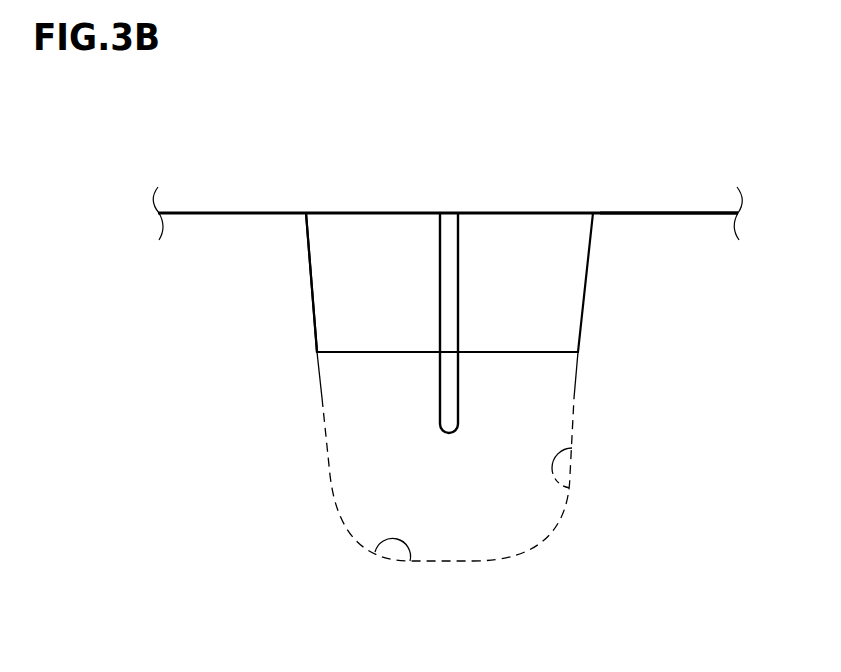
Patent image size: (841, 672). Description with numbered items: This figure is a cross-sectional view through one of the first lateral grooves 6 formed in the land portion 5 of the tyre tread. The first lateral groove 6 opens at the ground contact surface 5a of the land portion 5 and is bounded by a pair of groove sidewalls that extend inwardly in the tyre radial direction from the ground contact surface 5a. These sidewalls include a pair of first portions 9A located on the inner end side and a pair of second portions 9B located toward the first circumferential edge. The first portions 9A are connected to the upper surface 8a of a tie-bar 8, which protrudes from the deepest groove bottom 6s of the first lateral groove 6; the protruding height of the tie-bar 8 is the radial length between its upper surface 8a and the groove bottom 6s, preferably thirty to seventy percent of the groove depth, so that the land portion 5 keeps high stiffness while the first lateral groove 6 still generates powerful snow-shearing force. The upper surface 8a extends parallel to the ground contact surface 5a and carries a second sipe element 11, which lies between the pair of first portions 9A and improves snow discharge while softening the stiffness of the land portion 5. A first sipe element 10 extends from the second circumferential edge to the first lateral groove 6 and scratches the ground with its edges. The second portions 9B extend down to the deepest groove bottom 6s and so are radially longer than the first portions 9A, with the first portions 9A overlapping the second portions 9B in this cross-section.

The land portion 5 is at (233, 193).
The ground contact surface 5a is at (665, 213).
The tie-bar 8 is at (407, 332).
The first portions 9A is at (313, 282).
The upper surface 8a is at (363, 350).
The first sipe element 10 is at (458, 274).
The second sipe element 11 is at (483, 383).
The first lateral groove 6 is at (457, 502).
The second portions 9B is at (570, 487).
The groove bottom 6s is at (373, 553).